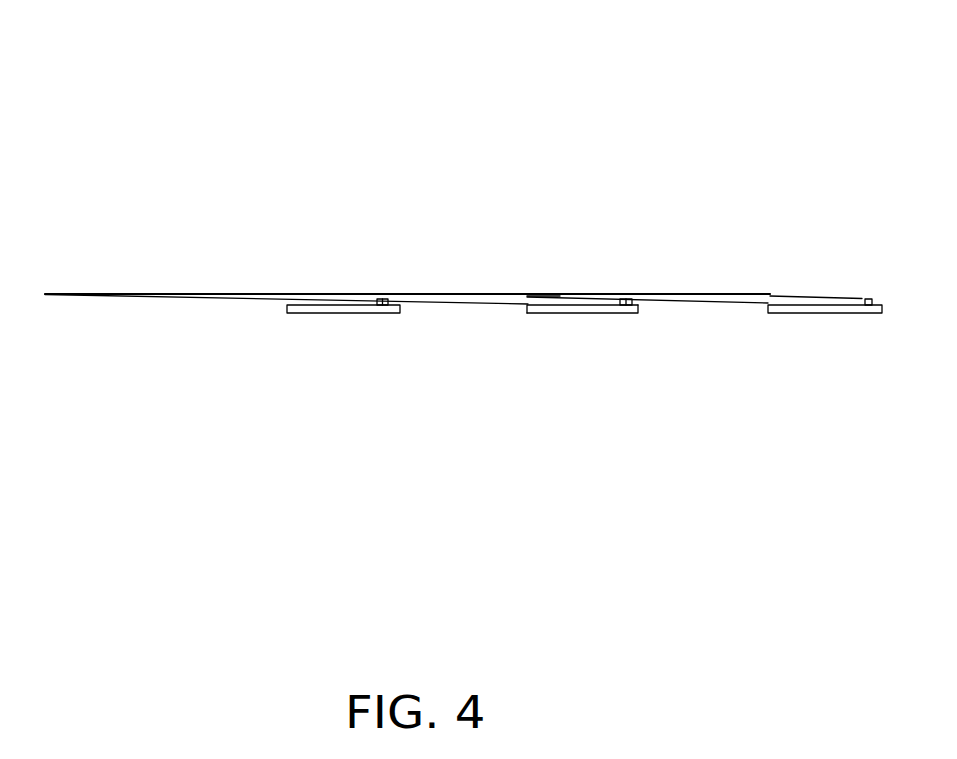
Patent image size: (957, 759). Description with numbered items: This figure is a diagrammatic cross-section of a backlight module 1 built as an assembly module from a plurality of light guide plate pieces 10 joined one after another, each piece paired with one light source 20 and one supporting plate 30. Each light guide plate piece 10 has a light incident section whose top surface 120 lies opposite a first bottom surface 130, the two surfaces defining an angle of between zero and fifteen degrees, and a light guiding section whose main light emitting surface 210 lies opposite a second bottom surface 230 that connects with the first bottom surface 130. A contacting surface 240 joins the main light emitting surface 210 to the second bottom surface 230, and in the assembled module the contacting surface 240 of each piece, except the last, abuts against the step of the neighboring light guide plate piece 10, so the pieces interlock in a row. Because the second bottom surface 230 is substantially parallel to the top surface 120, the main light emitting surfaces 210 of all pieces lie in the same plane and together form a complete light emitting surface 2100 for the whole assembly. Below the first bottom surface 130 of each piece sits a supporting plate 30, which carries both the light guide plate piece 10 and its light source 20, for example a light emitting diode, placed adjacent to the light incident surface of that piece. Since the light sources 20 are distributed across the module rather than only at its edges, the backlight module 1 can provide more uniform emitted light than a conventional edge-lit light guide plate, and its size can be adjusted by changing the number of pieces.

The backlight module 1 is at (471, 56).
The light guide plate piece 10 is at (135, 278).
The light source 20 is at (641, 304).
The supporting plate 30 is at (610, 310).
The top surface 120 is at (570, 296).
The first bottom surface 130 is at (570, 305).
The main light emitting surface 210 is at (420, 293).
The second bottom surface 230 is at (483, 303).
The contacting surface 240 is at (302, 273).
The complete light emitting surface 2100 is at (228, 293).